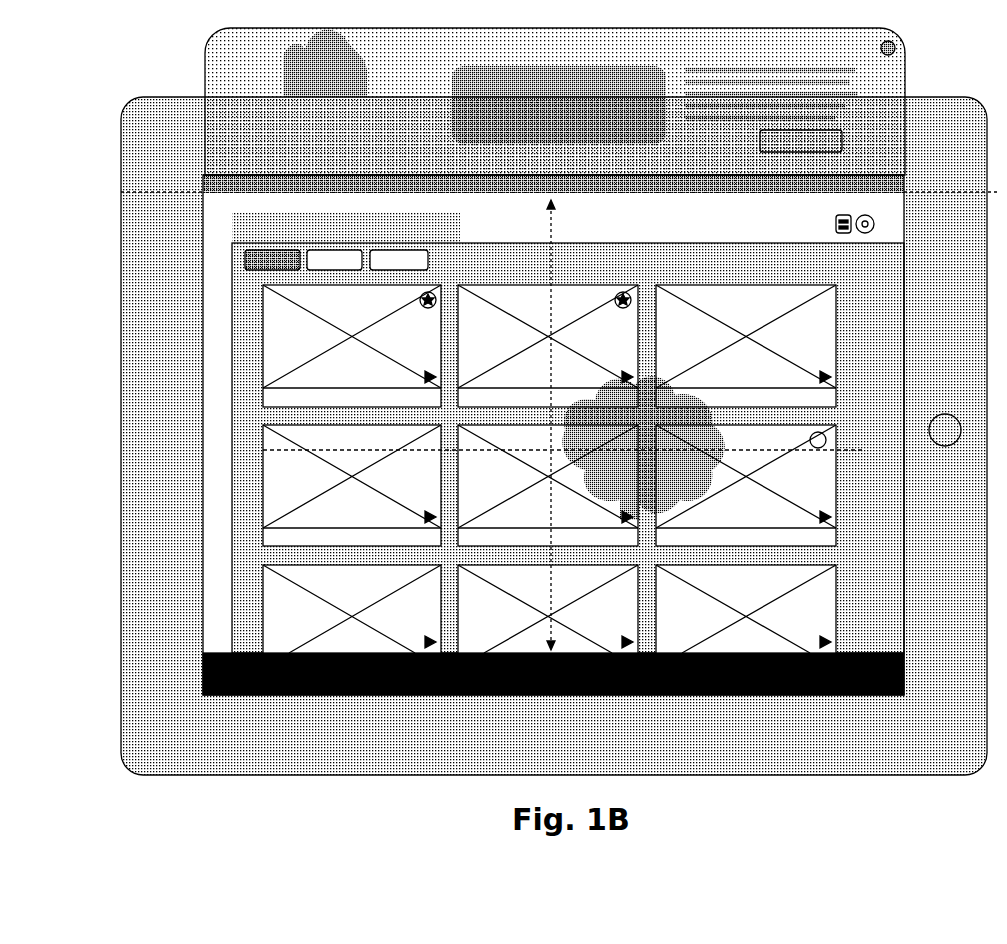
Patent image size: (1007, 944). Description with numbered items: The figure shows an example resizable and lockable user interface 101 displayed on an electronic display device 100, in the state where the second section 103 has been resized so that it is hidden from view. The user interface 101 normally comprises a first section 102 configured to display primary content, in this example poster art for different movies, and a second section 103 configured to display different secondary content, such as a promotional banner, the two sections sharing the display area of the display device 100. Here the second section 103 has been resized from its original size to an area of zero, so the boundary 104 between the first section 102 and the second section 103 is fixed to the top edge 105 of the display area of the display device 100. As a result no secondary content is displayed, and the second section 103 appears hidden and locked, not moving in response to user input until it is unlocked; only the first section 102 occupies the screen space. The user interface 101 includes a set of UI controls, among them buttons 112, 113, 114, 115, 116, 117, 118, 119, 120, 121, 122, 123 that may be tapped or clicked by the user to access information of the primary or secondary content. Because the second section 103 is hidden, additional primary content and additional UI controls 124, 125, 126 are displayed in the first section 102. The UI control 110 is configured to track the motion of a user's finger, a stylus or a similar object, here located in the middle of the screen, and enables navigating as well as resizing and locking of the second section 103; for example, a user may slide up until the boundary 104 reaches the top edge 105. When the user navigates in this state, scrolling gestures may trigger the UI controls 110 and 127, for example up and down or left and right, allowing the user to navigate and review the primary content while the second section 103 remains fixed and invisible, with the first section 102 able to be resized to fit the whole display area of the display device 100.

The electronic display device 100 is at (934, 97).
The resizable and lockable user interface 101 is at (720, 170).
The first section 102 is at (860, 270).
The second section 103 is at (884, 74).
The boundary 104 is at (945, 191).
The top edge 105 is at (881, 173).
The UI control 110 is at (554, 358).
The UI control 112 is at (266, 228).
The UI control 113 is at (350, 228).
The UI control 114 is at (492, 232).
The UI control 115 is at (290, 250).
The UI control 116 is at (360, 250).
The UI control 117 is at (405, 250).
The UI control 118 is at (432, 290).
The UI control 119 is at (584, 290).
The UI control 120 is at (758, 290).
The UI control 121 is at (350, 425).
The UI control 122 is at (482, 425).
The UI control 123 is at (742, 425).
The UI control 124 is at (350, 564).
The UI control 125 is at (482, 564).
The UI control 126 is at (742, 564).
The UI control 127 is at (805, 446).